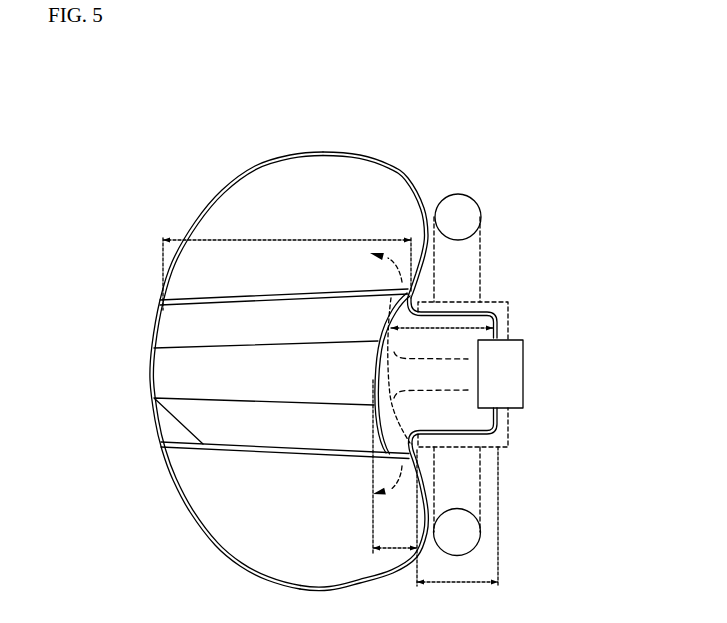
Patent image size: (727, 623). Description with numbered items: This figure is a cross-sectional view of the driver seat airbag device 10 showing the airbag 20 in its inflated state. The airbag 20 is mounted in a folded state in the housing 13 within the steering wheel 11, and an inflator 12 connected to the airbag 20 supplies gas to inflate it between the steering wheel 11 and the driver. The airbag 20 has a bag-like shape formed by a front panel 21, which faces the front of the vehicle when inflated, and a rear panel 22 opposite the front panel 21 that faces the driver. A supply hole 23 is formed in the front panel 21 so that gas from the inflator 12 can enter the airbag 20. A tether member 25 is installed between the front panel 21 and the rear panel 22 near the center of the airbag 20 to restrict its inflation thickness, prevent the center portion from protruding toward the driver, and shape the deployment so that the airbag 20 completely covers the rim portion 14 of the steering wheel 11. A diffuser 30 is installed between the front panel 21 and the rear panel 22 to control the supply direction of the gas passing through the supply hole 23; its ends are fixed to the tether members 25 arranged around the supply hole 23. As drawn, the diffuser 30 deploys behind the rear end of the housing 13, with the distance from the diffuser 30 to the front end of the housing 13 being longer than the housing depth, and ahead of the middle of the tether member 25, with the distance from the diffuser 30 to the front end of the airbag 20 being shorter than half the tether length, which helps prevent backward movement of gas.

The driver seat airbag device 10 is at (354, 80).
The steering wheel 11 is at (489, 201).
The inflator 12 is at (525, 372).
The housing 13 is at (509, 304).
The rim portion 14 is at (457, 194).
The airbag 20 is at (273, 155).
The front panel 21 is at (380, 163).
The rear panel 22 is at (222, 188).
The supply hole 23 is at (444, 410).
The tether member 25 is at (155, 398).
The diffuser 30 is at (360, 444).